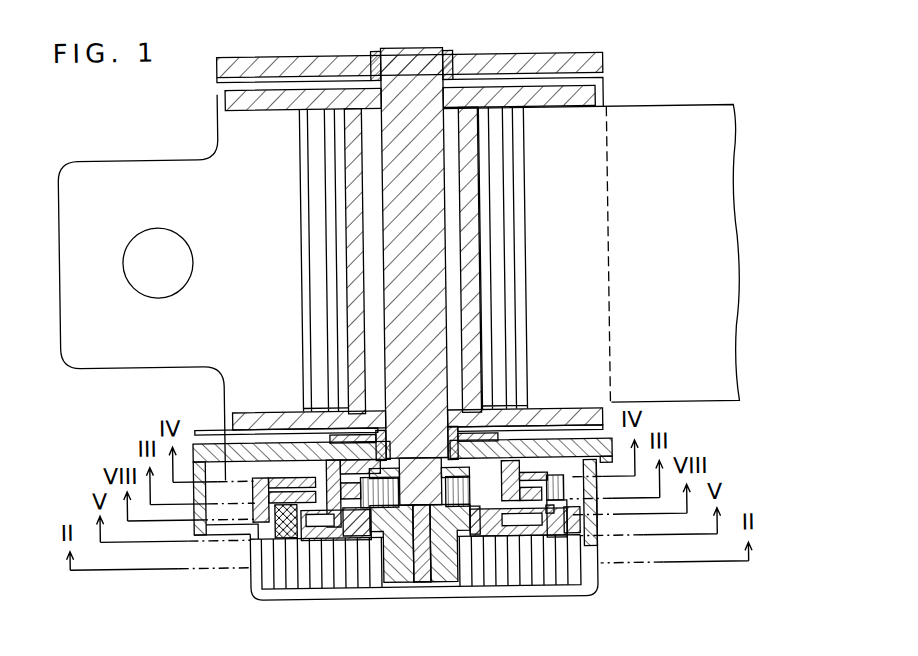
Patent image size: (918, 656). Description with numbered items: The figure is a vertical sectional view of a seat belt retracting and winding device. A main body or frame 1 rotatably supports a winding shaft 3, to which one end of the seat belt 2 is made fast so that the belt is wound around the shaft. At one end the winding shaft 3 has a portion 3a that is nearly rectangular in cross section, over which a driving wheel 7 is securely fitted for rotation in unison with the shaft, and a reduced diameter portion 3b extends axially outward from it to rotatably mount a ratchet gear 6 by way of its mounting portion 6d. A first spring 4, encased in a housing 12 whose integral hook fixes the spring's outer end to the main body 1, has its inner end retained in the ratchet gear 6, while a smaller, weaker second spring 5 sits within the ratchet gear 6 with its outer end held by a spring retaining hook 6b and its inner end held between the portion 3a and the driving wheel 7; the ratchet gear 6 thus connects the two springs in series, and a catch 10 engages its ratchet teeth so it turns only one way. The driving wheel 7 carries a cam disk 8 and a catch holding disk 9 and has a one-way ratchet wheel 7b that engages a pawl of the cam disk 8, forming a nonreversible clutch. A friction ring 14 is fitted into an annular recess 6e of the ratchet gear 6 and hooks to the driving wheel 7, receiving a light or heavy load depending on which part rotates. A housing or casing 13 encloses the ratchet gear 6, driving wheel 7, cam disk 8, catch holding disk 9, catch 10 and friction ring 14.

The main body or frame 1 is at (104, 366).
The seat belt 2 is at (737, 372).
The winding shaft 3 is at (418, 70).
The portion 3a is at (423, 447).
The reduced diameter portion 3b is at (423, 572).
The first spring 4 is at (560, 540).
The second spring 5 is at (451, 488).
The ratchet gear 6 is at (448, 578).
The spring retaining hook 6b is at (370, 532).
The mounting portion 6d is at (462, 532).
The annular recess 6e is at (248, 548).
The driving wheel 7 is at (548, 468).
The one-way ratchet wheel 7b is at (545, 515).
The cam disk 8 is at (583, 520).
The catch holding disk 9 is at (586, 438).
The catch 10 is at (260, 476).
The housing 12 is at (322, 540).
The housing or casing 13 is at (207, 447).
The friction ring 14 is at (290, 540).